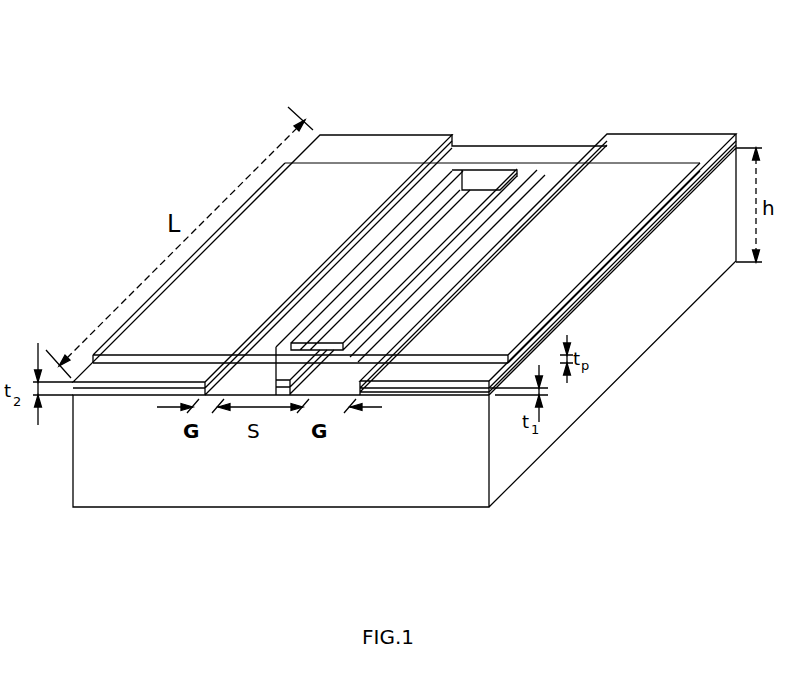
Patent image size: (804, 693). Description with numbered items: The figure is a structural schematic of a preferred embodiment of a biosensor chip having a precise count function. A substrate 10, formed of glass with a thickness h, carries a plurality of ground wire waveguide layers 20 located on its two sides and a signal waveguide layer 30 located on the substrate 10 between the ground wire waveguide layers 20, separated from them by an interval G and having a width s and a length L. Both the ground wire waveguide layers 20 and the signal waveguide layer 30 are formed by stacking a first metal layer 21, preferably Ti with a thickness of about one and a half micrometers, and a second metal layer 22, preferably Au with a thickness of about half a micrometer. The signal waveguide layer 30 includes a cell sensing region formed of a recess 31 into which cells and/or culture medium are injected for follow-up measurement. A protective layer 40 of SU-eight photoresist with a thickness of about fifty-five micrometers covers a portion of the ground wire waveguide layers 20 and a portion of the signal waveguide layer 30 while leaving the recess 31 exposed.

The substrate 10 is at (448, 506).
The ground wire waveguide layers 20 is at (371, 140).
The first metal layer 21 is at (670, 213).
The second metal layer 22 is at (627, 249).
The signal waveguide layer 30 is at (420, 220).
The recess 31 is at (469, 198).
The protective layer 40 is at (573, 280).